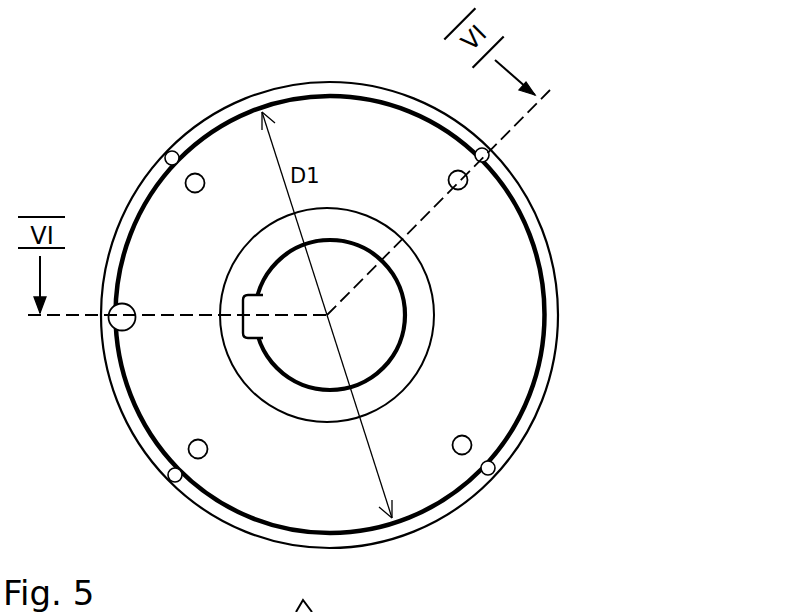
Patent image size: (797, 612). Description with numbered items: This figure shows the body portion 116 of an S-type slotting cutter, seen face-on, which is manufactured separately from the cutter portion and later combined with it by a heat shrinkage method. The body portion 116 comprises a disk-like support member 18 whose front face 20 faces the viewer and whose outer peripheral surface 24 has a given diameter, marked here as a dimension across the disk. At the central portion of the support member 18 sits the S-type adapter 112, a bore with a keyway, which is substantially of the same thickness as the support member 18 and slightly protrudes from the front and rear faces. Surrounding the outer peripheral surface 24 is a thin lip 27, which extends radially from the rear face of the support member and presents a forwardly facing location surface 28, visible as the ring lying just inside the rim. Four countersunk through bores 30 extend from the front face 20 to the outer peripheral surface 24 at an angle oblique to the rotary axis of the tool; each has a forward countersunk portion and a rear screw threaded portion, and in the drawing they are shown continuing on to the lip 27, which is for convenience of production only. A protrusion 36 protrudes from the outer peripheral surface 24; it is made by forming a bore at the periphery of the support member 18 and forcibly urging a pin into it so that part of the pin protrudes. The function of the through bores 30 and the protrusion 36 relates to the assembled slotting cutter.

The support member 18 is at (122, 163).
The front face 20 is at (335, 494).
The outer peripheral surface 24 is at (150, 453).
The lip 27 is at (552, 375).
The location surface 28 is at (520, 430).
The countersunk through bore 30 is at (202, 458).
The protrusion 36 is at (108, 328).
The S-type adapter 112 is at (415, 321).
The body portion 116 is at (647, 97).